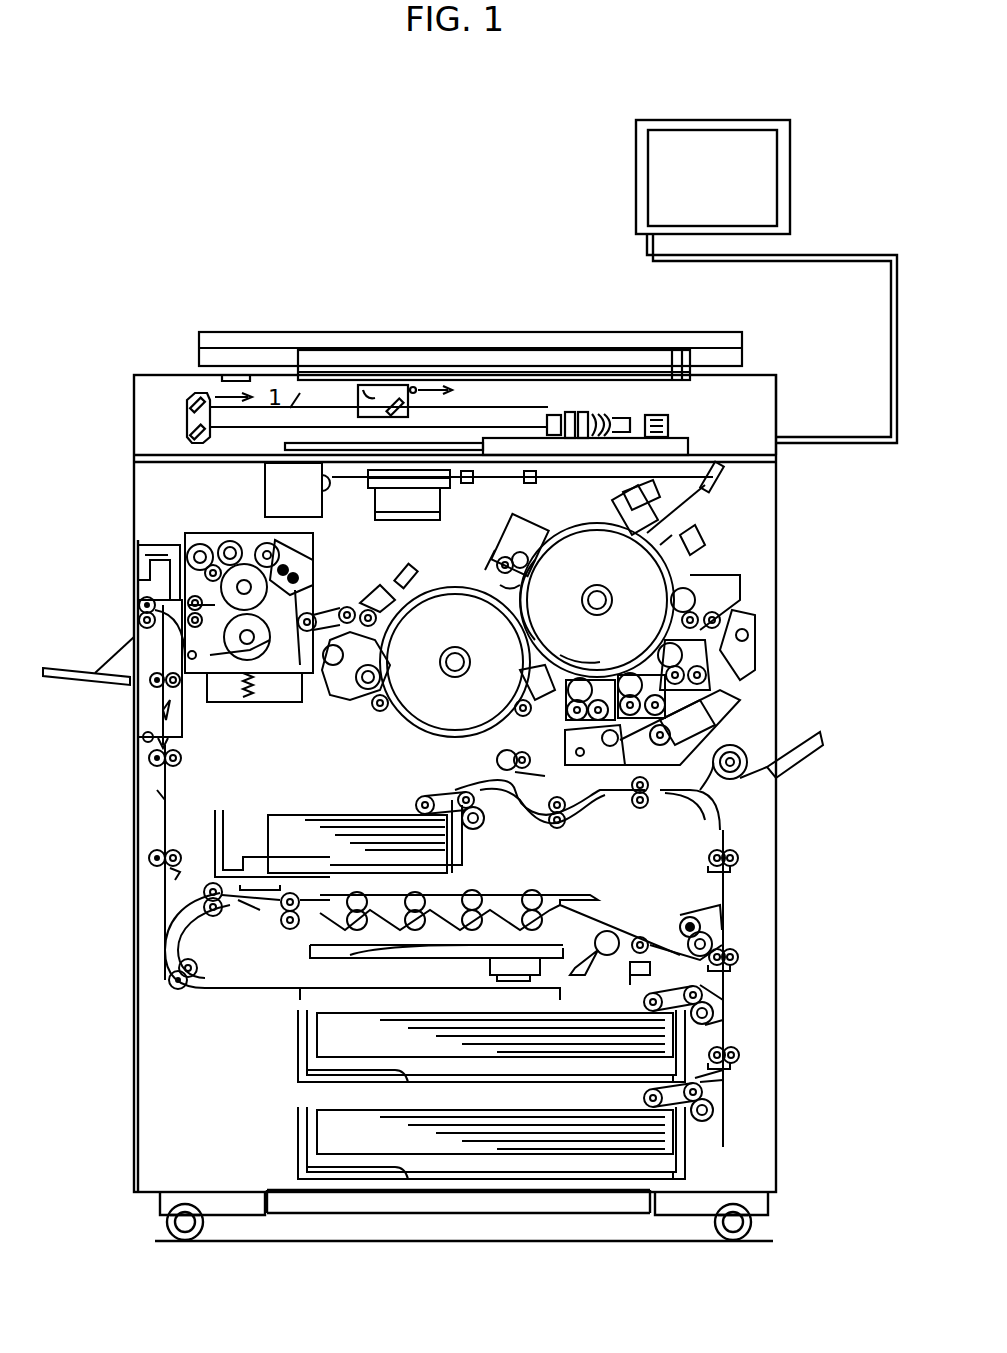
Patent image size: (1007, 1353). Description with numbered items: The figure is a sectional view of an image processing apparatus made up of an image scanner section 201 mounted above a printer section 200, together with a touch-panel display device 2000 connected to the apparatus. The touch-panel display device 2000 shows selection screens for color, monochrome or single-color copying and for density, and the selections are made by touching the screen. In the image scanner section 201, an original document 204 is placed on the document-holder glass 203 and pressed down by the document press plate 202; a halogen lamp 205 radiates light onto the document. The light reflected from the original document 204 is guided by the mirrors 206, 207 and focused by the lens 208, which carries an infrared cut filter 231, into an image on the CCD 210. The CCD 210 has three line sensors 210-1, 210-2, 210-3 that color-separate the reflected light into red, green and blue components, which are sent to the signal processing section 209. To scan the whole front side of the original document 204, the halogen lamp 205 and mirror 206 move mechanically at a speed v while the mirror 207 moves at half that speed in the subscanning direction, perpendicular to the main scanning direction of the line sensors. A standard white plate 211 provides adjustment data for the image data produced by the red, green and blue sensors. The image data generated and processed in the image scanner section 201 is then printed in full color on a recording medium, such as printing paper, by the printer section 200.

The printer section 200 is at (784, 548).
The image scanner section 201 is at (758, 376).
The document press plate 202 is at (614, 338).
The document-holder glass 203 is at (680, 362).
The original document 204 is at (463, 374).
The halogen lamp 205 is at (375, 392).
The mirror 206 is at (408, 410).
The mirror 207 is at (187, 427).
The lens 208 is at (578, 412).
The signal processing section 209 is at (530, 446).
The CCD 210 is at (656, 414).
The line sensor 210-1 is at (668, 420).
The line sensor 210-2 is at (668, 426).
The line sensor 210-3 is at (668, 432).
The standard white plate 211 is at (236, 374).
The infrared cut filter 231 is at (552, 412).
The touch-panel display device 2000 is at (636, 166).